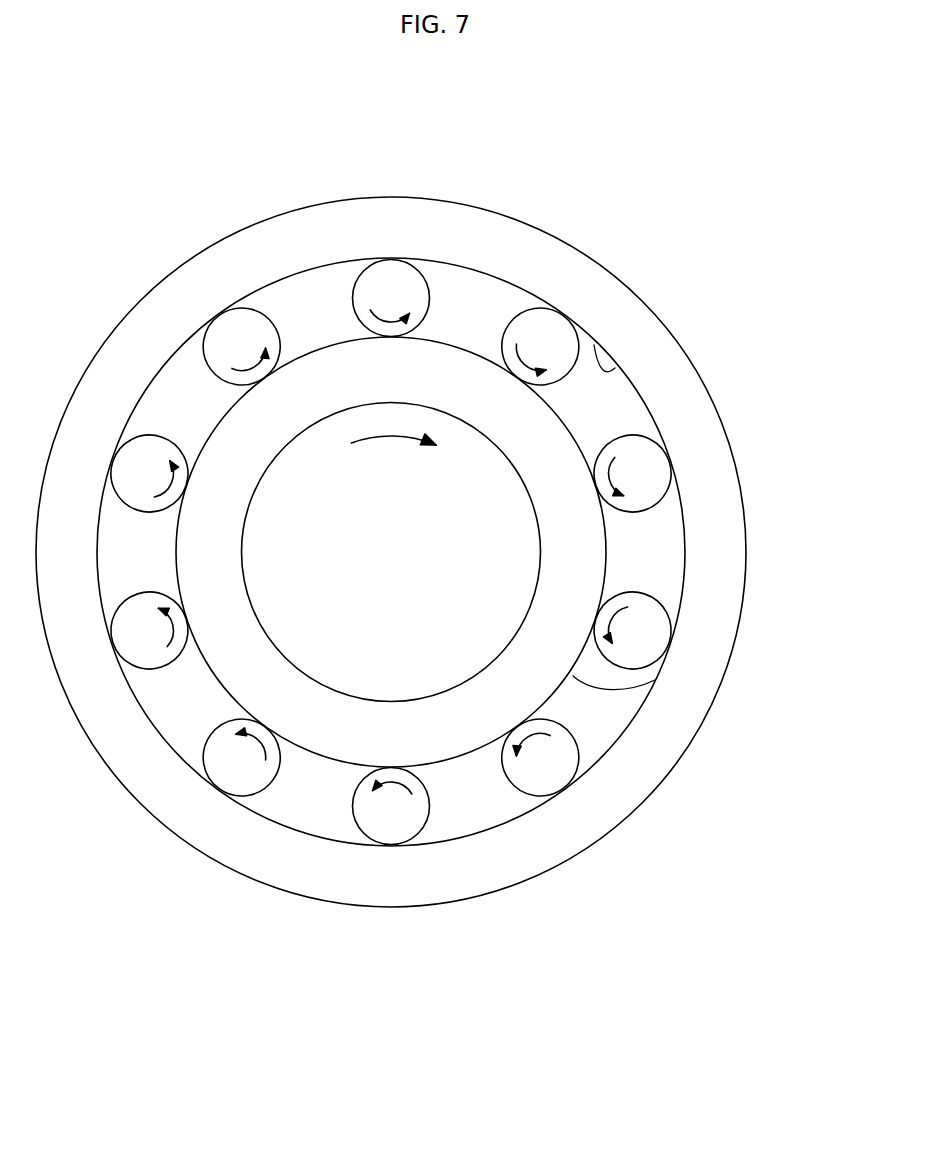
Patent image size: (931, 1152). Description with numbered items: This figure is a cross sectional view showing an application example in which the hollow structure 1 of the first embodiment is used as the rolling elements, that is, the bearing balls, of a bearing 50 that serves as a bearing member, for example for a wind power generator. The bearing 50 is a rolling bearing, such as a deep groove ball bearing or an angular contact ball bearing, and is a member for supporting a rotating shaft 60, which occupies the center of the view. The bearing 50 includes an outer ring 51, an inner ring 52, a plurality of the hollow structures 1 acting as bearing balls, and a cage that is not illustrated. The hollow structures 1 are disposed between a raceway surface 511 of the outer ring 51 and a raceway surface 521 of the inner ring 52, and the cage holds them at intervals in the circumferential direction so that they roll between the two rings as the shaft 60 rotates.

The hollow structure 1 is at (390, 287).
The bearing 50 is at (570, 240).
The outer ring 51 is at (672, 380).
The raceway surface 511 is at (615, 368).
The inner ring 52 is at (580, 572).
The raceway surface 521 is at (655, 680).
The rotating shaft 60 is at (477, 623).